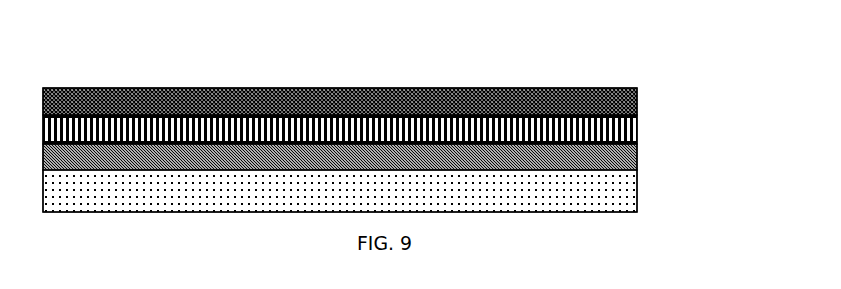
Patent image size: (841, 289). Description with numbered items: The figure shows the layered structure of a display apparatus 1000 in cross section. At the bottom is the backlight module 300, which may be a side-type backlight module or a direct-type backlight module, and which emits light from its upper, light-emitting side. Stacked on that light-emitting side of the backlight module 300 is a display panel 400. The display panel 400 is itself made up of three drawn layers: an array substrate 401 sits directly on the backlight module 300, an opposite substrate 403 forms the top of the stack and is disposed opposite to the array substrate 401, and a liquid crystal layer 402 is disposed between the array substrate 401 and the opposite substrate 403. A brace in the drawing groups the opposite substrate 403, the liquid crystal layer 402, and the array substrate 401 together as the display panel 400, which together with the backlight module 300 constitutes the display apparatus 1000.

The display apparatus 1000 is at (383, 115).
The display panel 400 is at (383, 130).
The opposite substrate 403 is at (623, 103).
The liquid crystal layer 402 is at (622, 133).
The array substrate 401 is at (622, 157).
The backlight module 300 is at (613, 197).